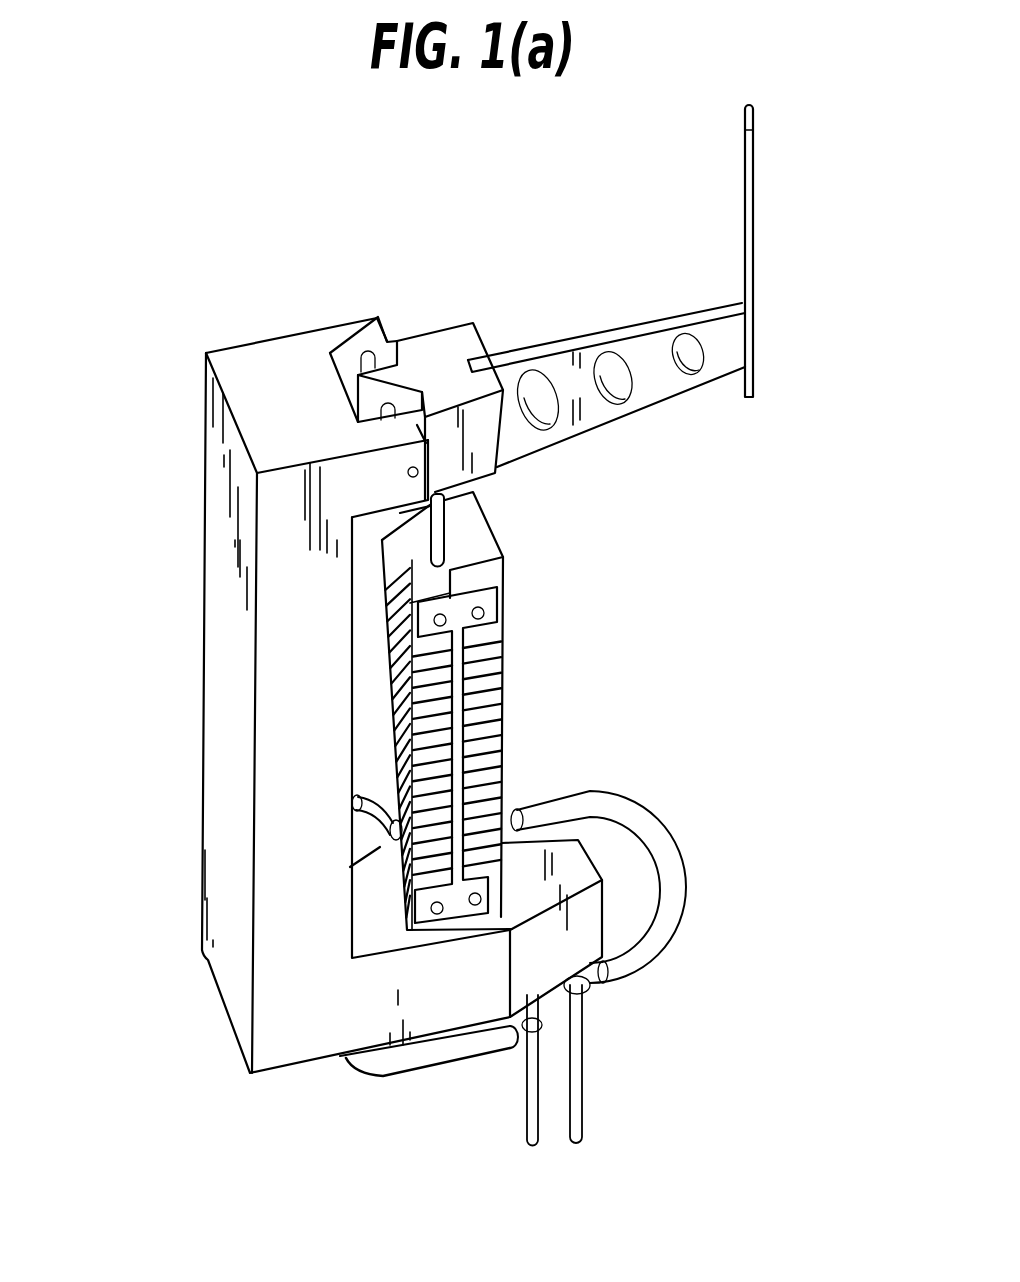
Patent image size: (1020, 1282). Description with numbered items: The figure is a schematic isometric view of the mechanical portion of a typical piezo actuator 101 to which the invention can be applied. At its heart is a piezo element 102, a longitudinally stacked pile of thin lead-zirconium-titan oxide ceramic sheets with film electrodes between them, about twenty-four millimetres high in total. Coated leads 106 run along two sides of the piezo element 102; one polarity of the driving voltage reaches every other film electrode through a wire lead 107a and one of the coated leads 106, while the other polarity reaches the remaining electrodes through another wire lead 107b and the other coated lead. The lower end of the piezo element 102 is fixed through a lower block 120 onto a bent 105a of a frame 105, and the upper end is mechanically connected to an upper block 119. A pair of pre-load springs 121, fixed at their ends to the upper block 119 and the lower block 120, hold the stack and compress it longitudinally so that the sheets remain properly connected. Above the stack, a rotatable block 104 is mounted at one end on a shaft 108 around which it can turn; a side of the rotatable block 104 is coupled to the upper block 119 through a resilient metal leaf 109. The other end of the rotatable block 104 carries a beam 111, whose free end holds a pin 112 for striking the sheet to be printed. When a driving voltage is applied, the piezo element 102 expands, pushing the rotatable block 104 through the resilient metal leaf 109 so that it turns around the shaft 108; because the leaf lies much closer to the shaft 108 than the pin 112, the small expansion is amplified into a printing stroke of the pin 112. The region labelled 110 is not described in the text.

The piezo actuator 101 is at (190, 349).
The piezo element 102 is at (507, 672).
The rotatable block 104 is at (445, 352).
The frame 105 is at (290, 656).
The bent 105a is at (353, 1000).
The coated leads 106 is at (385, 698).
The wire lead 107a is at (668, 857).
The wire lead 107b is at (430, 1055).
The shaft 108 is at (357, 354).
The resilient metal leaf 109 is at (447, 505).
The upper front portion 110 is at (375, 485).
The beam 111 is at (650, 355).
The pin 112 is at (757, 258).
The upper block 119 is at (487, 575).
The lower block 120 is at (385, 887).
The pre-load springs 121 is at (458, 735).